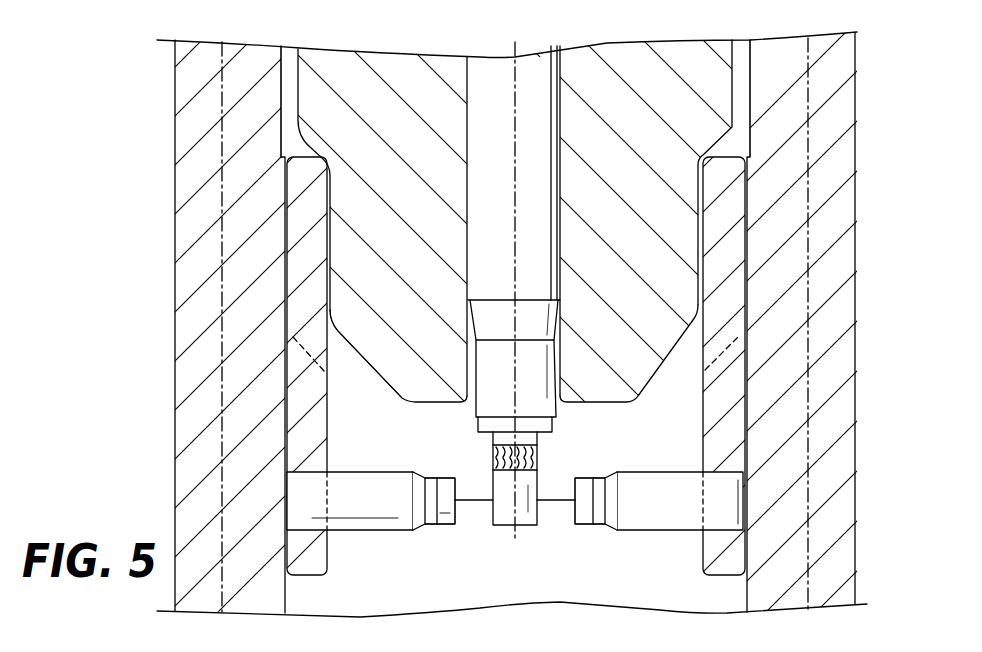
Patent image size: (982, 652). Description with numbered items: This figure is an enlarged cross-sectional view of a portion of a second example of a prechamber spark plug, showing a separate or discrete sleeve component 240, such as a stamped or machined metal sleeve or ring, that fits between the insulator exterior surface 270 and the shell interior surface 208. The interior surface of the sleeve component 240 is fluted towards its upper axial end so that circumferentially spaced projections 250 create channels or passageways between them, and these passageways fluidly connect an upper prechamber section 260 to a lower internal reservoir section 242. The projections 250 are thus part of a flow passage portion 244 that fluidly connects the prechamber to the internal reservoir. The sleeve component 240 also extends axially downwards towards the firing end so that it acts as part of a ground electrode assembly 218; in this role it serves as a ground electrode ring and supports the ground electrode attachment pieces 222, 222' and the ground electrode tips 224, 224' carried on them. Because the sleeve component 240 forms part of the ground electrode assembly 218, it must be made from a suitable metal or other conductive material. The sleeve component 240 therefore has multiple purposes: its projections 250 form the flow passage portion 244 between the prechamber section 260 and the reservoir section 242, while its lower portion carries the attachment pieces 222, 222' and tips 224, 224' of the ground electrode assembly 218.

The shell interior surface 208 is at (286, 135).
The ground electrode assembly 218 is at (750, 506).
The ground electrode attachment piece 222 is at (390, 533).
The ground electrode attachment piece 222' is at (640, 529).
The ground electrode tip 224 is at (419, 478).
The ground electrode tip 224' is at (616, 482).
The sleeve component 240 is at (730, 453).
The lower internal reservoir section 242 is at (293, 82).
The flow passage portion 244 is at (333, 329).
The projections 250 is at (316, 220).
The upper prechamber section 260 is at (678, 362).
The insulator exterior surface 270 is at (733, 91).